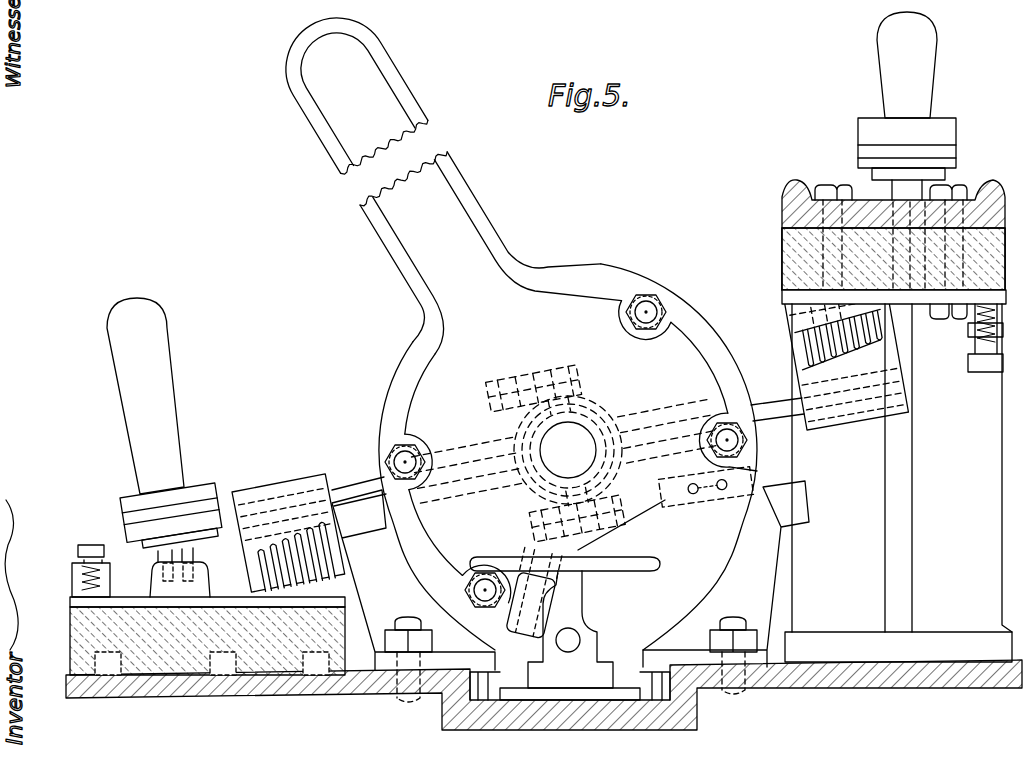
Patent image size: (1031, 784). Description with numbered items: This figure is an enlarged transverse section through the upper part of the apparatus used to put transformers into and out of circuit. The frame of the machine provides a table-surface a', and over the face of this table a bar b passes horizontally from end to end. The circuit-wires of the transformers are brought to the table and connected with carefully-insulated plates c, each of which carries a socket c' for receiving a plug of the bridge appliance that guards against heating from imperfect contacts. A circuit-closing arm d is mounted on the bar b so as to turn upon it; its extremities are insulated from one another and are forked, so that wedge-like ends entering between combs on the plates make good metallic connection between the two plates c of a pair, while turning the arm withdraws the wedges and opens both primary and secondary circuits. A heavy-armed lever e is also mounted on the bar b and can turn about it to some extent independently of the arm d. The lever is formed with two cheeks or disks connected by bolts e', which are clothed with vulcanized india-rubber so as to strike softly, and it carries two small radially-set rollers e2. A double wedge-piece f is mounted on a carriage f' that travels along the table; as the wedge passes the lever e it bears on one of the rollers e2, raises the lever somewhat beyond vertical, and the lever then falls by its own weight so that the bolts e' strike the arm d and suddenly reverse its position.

The table-surface a' is at (544, 695).
The bar b is at (565, 451).
The insulated plates c is at (544, 427).
The socket c' is at (181, 572).
The circuit-closing arm d is at (370, 479).
The heavy-armed lever e is at (521, 334).
The bolts e' is at (584, 445).
The rollers e2 is at (548, 605).
The double wedge-piece f is at (565, 553).
The carriage f' is at (570, 635).